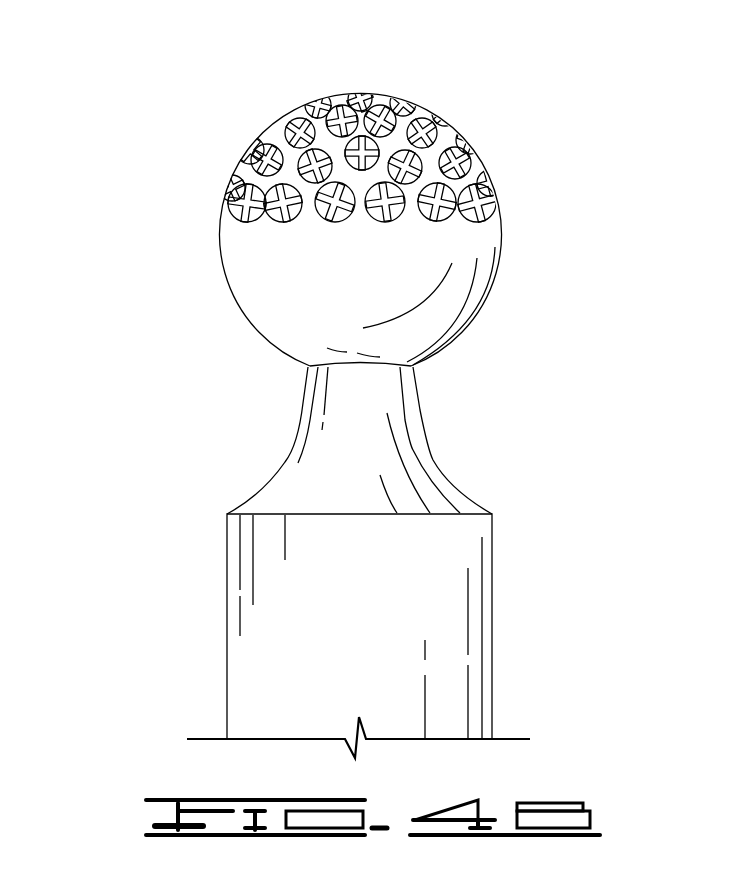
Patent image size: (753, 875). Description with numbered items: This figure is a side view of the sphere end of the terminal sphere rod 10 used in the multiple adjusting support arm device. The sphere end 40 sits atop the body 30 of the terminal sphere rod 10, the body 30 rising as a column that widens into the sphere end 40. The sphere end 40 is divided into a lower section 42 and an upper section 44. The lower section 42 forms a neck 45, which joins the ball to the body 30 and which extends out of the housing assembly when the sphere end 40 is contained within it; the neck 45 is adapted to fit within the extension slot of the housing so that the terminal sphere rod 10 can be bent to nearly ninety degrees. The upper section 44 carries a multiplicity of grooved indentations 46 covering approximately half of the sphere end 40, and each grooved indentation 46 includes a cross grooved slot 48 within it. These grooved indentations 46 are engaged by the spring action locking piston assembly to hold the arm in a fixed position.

The terminal sphere rod 10 is at (218, 641).
The body 30 is at (492, 642).
The sphere end 40 is at (500, 270).
The lower section 42 is at (243, 315).
The upper section 44 is at (473, 148).
The neck 45 is at (417, 407).
The grooved indentations 46 is at (250, 152).
The cross grooved slot 48 is at (382, 123).